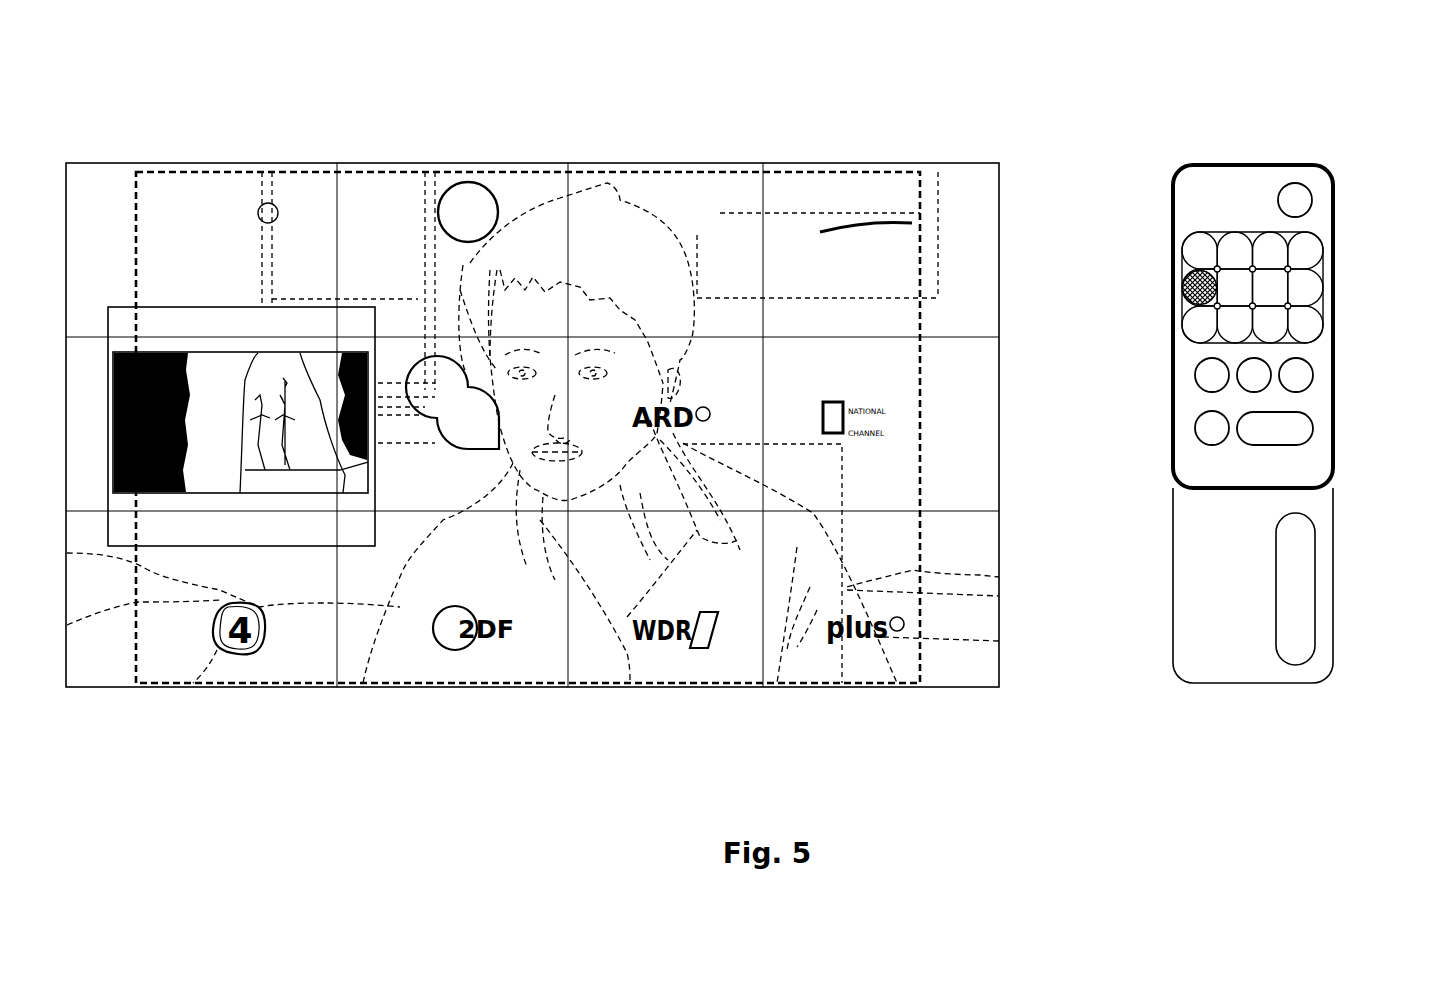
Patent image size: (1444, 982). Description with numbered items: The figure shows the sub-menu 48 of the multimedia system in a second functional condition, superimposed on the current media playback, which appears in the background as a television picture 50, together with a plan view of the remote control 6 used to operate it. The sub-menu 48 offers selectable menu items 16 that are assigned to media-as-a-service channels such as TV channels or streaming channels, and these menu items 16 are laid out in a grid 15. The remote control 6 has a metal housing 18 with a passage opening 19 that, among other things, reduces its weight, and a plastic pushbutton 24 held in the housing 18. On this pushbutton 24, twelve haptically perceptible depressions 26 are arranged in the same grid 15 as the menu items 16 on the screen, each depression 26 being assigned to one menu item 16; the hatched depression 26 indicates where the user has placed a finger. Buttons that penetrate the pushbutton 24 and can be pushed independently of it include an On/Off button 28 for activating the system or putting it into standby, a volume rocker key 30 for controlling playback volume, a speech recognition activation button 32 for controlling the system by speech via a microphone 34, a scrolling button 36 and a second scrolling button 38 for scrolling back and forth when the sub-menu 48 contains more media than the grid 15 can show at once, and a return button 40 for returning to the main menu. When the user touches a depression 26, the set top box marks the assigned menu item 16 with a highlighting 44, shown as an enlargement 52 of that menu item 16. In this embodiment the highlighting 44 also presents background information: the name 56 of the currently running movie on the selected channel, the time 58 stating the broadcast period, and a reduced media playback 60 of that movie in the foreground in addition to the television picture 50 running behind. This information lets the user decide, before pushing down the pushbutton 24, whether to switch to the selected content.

The remote control 6 is at (1384, 139).
The grid 15 is at (908, 168).
The menu item 16 is at (238, 253).
The housing 18 is at (1320, 510).
The passage opening 19 is at (1298, 600).
The pushbutton 24 is at (1195, 460).
The depressions 26 is at (1195, 253).
The On/Off button 28 is at (1297, 193).
The volume rocker key 30 is at (1313, 428).
The speech recognition activation button 32 is at (1195, 428).
The microphone 34 is at (1223, 197).
The scrolling button 36 is at (1195, 375).
The second scrolling button 38 is at (1313, 375).
The return button 40 is at (1258, 391).
The highlighting 44 is at (340, 287).
The sub-menu 48 is at (1017, 141).
The television picture 50 is at (538, 317).
The enlargement 52 is at (173, 350).
The name 56 is at (300, 547).
The time 58 is at (300, 510).
The reduced media playback 60 is at (376, 353).